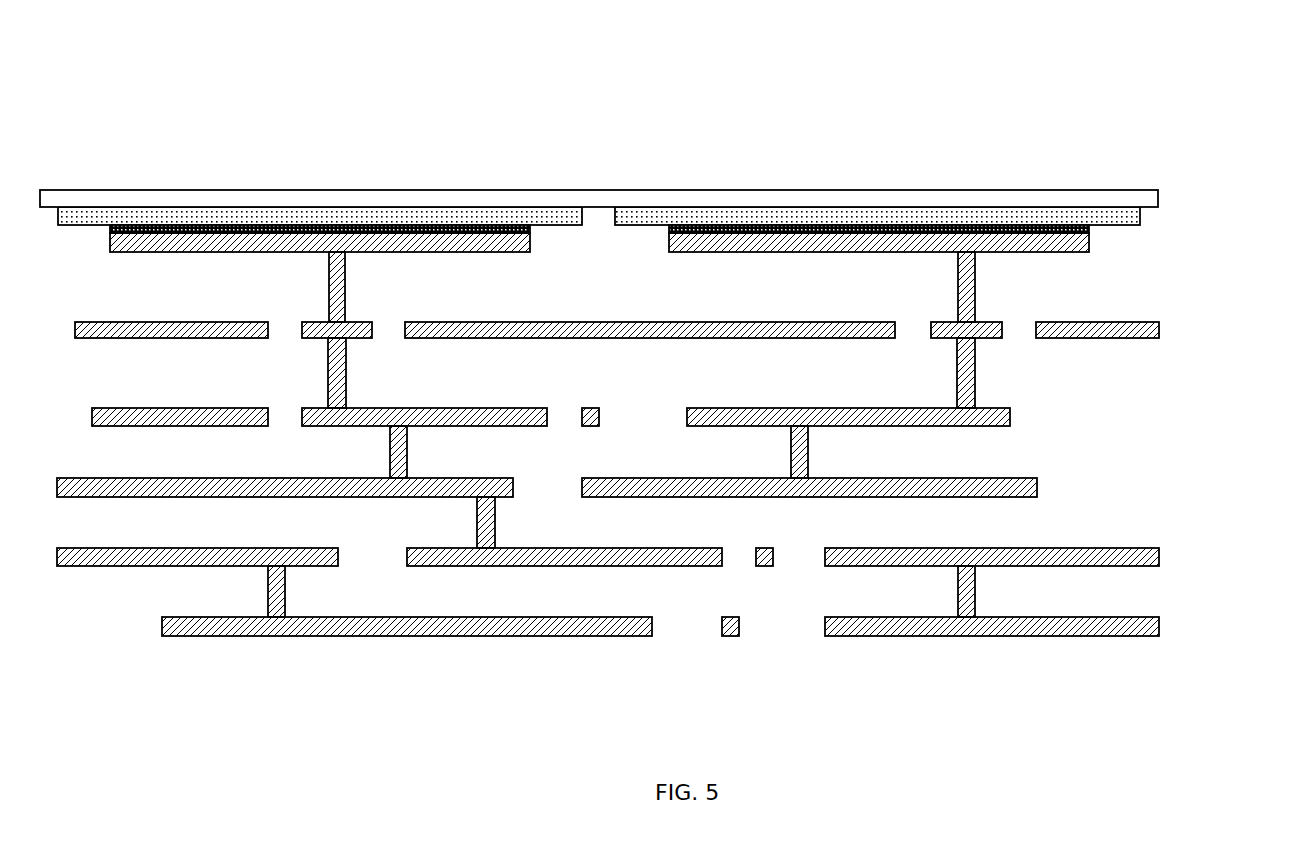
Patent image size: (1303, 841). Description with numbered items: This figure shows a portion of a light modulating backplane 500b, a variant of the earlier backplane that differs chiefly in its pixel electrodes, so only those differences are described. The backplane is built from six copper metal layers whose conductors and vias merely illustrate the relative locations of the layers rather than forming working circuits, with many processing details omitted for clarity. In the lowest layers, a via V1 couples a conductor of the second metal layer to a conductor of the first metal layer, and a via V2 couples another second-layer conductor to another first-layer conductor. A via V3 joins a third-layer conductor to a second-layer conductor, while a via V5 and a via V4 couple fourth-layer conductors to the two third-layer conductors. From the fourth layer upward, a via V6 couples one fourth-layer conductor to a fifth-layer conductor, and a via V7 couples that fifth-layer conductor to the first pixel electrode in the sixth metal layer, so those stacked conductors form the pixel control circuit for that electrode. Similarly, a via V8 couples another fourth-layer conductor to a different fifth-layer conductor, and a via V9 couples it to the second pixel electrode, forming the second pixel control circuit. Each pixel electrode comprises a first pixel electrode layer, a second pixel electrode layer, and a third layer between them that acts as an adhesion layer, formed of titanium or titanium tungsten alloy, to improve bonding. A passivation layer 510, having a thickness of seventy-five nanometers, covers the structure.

The light modulating backplane 500b is at (713, 75).
The passivation layer 510 is at (598, 199).
The via V1 is at (285, 600).
The via V2 is at (975, 600).
The via V3 is at (495, 532).
The via V4 is at (808, 460).
The via V5 is at (407, 460).
The via V6 is at (347, 383).
The via V7 is at (345, 303).
The via V8 is at (975, 390).
The via V9 is at (975, 303).